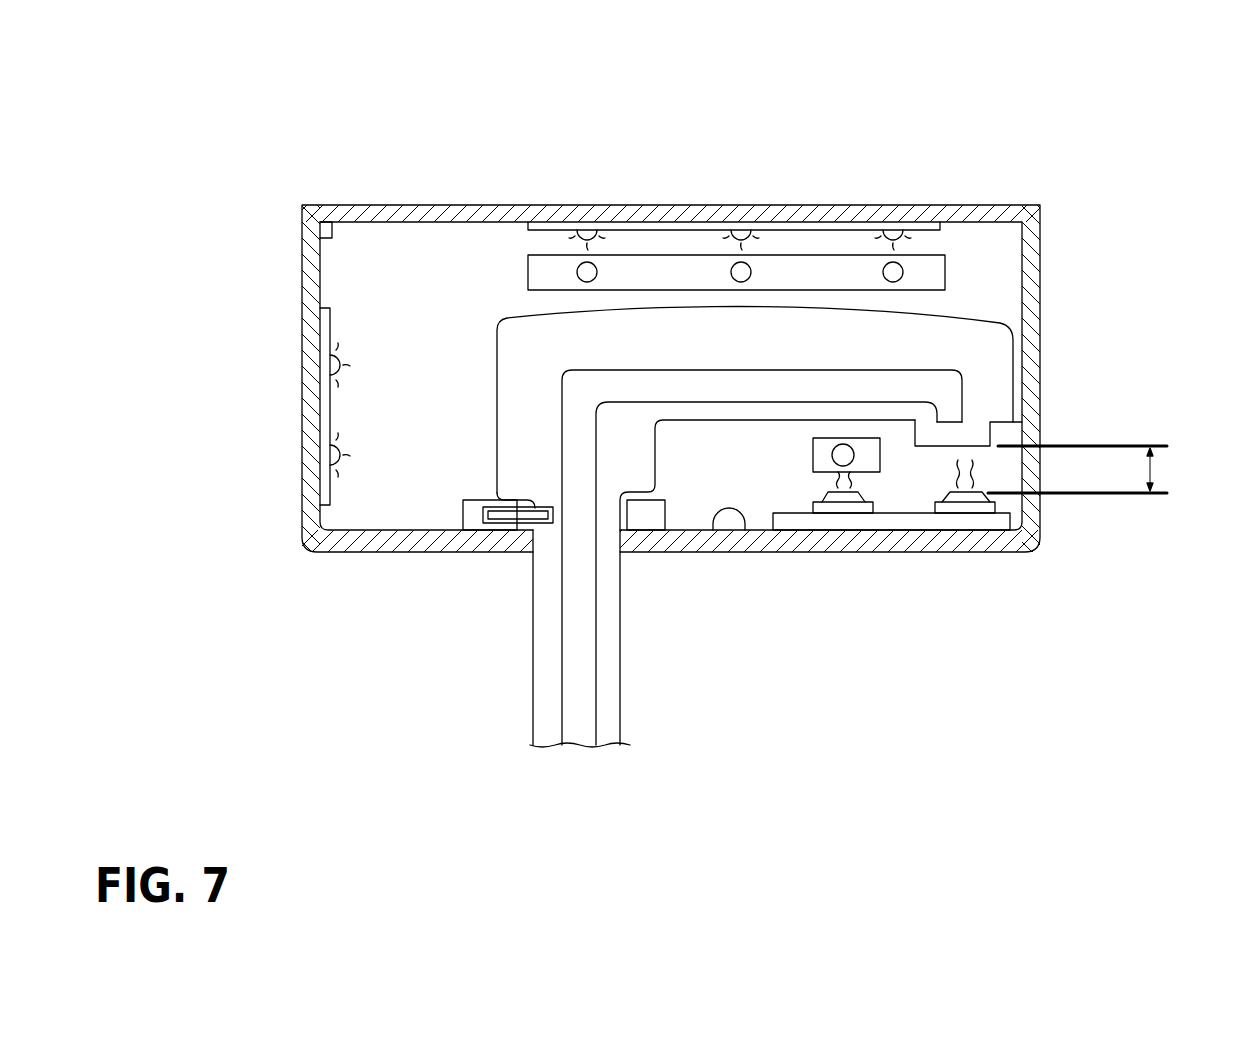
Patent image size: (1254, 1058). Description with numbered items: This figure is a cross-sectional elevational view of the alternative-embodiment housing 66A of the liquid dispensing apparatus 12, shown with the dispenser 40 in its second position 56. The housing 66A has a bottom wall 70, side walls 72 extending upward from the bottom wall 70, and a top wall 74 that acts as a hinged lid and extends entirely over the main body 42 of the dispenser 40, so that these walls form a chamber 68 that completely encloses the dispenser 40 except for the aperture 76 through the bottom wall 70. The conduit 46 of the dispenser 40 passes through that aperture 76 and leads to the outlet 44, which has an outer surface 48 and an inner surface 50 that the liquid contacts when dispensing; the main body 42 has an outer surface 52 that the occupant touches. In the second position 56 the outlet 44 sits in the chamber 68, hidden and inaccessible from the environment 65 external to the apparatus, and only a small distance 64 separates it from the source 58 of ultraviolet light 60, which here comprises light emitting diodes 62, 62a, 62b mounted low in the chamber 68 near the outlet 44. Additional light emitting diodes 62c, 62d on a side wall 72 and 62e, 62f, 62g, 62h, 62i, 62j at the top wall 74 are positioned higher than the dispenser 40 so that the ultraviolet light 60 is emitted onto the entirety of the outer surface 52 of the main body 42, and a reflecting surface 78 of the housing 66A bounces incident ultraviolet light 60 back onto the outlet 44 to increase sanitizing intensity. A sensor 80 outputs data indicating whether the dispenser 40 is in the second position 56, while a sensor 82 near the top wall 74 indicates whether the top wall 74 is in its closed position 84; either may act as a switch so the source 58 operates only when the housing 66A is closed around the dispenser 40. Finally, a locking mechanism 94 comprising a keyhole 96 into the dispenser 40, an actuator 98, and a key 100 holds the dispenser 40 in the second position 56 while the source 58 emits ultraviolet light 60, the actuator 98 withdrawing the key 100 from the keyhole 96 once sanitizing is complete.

The liquid dispensing apparatus 12 is at (621, 365).
The dispenser 40 is at (683, 299).
The main body 42 is at (805, 323).
The outlet 44 is at (910, 530).
The conduit 46 is at (722, 591).
The outer surface 48 is at (992, 436).
The inner surface 50 is at (952, 432).
The outer surface 52 is at (832, 305).
The second position 56 is at (963, 302).
The source of ultraviolet light 58 is at (965, 505).
The ultraviolet light 60 is at (967, 470).
The light emitting diode 62 is at (915, 559).
The light emitting diode 62a is at (838, 505).
The light emitting diode 62b is at (813, 562).
The light emitting diode 62c is at (335, 366).
The light emitting diode 62d is at (333, 455).
The light emitting diode 62e is at (587, 221).
The light emitting diode 62f is at (594, 268).
The light emitting diode 62g is at (741, 221).
The light emitting diode 62h is at (748, 268).
The light emitting diode 62i is at (895, 221).
The light emitting diode 62j is at (900, 268).
The distance 64 is at (1158, 470).
The environment 65 is at (621, 342).
The housing 66A is at (322, 320).
The chamber 68 is at (390, 505).
The bottom wall 70 is at (385, 540).
The side walls 72 is at (648, 365).
The top wall 74 is at (436, 215).
The aperture 76 is at (548, 565).
The surface 78 is at (745, 532).
The sensor 80 is at (647, 503).
The sensor 82 is at (322, 228).
The closed position 84 is at (480, 180).
The locking mechanism 94 is at (463, 518).
The keyhole 96 is at (548, 495).
The actuator 98 is at (478, 528).
The key 100 is at (505, 522).